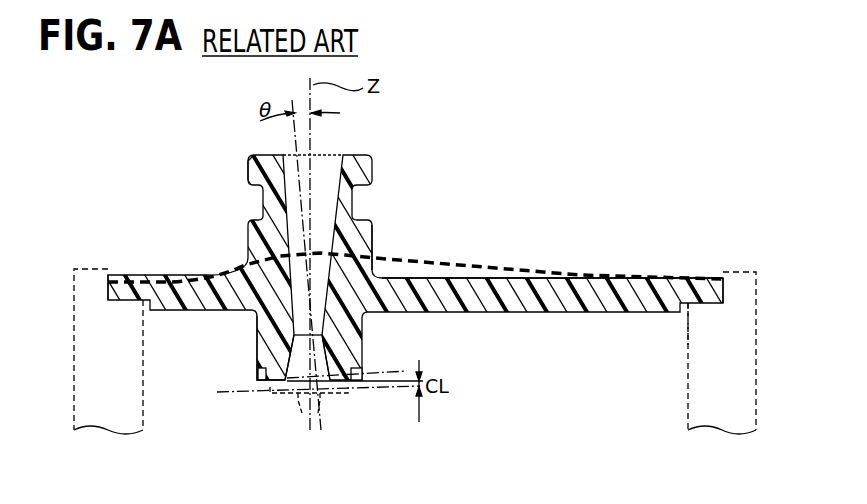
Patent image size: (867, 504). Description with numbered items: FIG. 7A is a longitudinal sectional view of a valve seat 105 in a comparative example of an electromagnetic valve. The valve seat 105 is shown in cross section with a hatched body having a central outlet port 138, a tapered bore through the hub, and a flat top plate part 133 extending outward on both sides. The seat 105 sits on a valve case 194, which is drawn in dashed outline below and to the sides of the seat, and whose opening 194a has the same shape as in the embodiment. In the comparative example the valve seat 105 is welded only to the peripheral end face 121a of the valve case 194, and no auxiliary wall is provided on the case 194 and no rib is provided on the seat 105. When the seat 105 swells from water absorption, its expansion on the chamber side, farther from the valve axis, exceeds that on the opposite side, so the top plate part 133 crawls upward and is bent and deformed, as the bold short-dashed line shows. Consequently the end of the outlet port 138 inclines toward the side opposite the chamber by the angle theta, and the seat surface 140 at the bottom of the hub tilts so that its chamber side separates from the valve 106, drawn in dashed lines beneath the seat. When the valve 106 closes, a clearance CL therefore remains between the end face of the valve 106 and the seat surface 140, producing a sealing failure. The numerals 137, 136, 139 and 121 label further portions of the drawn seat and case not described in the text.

The valve seat 105 is at (190, 181).
The outlet port 138 is at (254, 175).
The hub flange 137 is at (318, 285).
The lower hub portion 136 is at (316, 349).
The hub foot 139 is at (263, 352).
The seat surface 140 is at (289, 378).
The valve 106 is at (342, 390).
The top plate part 133 is at (593, 300).
The opening 194a is at (688, 345).
The peripheral end face 121a is at (128, 275).
The valve case 194 is at (765, 305).
The yoke 121 is at (85, 383).